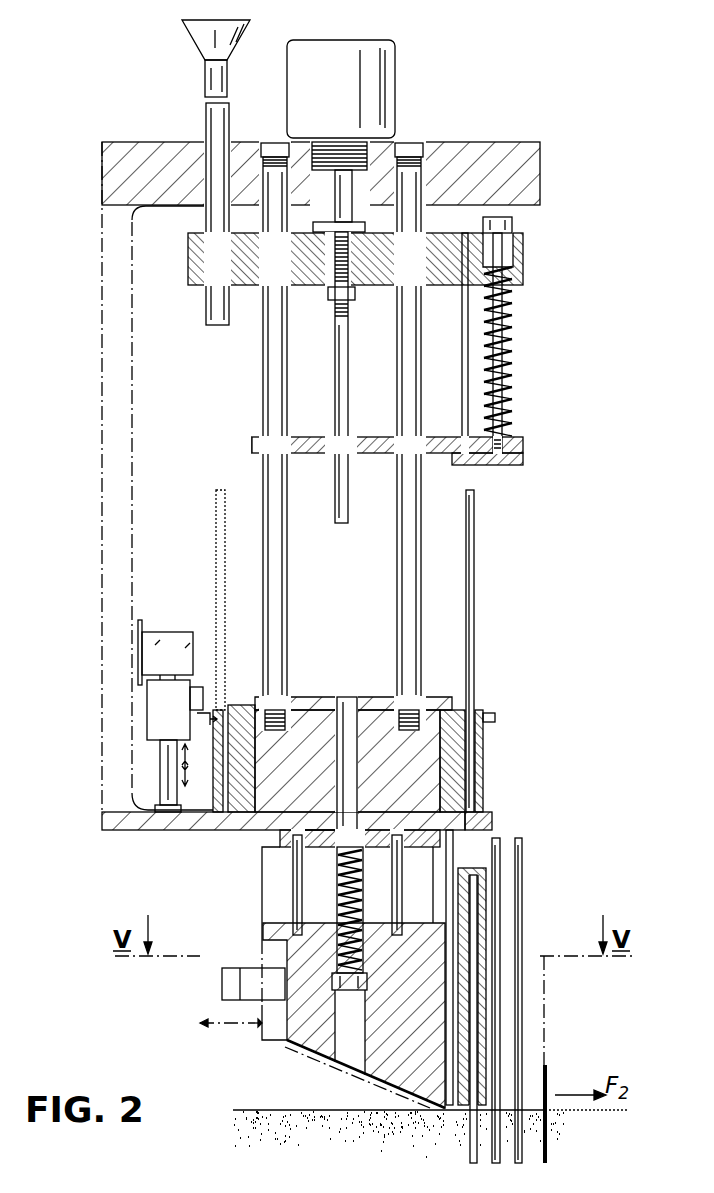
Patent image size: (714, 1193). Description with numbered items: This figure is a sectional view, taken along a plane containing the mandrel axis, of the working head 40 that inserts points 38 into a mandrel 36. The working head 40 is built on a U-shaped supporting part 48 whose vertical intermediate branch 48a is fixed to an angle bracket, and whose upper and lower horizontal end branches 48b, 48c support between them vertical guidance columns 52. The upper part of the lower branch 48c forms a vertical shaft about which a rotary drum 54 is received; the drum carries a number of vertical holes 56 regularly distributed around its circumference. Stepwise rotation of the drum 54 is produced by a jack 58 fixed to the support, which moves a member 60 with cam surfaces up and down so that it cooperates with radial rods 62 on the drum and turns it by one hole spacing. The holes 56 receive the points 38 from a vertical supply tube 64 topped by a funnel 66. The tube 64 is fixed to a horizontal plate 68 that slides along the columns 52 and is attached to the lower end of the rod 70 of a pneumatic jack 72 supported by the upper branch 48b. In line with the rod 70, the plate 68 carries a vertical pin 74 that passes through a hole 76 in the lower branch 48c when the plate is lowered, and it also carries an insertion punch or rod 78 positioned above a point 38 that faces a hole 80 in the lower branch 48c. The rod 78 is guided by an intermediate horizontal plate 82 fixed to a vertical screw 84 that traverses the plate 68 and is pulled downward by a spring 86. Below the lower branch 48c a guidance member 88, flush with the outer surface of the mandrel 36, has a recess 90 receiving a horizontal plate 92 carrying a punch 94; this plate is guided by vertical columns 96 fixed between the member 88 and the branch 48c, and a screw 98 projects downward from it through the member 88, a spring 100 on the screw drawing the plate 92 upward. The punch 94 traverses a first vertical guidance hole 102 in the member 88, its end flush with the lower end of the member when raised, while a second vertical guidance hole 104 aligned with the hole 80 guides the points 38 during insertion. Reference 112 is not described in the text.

The mandrel 36 is at (295, 1124).
The points 38 is at (218, 533).
The working head 40 is at (560, 478).
The U-shaped supporting part 48 is at (98, 290).
The intermediate branch 48a is at (110, 468).
The upper horizontal end branch 48b is at (527, 156).
The lower horizontal end branch 48c is at (175, 836).
The vertical guidance columns 52 is at (410, 535).
The rotary drum 54 is at (445, 755).
The holes 56 is at (226, 814).
The jack 58 is at (150, 650).
The member 60 is at (158, 715).
The radial rods 62 is at (490, 715).
The vertical supply tube 64 is at (212, 123).
The funnel 66 is at (208, 38).
The horizontal plate 68 is at (195, 262).
The rod 70 is at (338, 187).
The pneumatic jack 72 is at (373, 87).
The vertical pin 74 is at (343, 390).
The hole 76 is at (345, 710).
The insertion punch or rod 78 is at (465, 395).
The hole 80 is at (478, 822).
The intermediate horizontal plate 82 is at (522, 470).
The vertical screw 84 is at (500, 300).
The spring 86 is at (510, 345).
The guidance member 88 is at (290, 1045).
The recess 90 is at (270, 877).
The horizontal plate 92 is at (324, 835).
The punch 94 is at (498, 853).
The vertical columns 96 is at (290, 900).
The screw 98 is at (352, 1000).
The spring 100 is at (362, 848).
The first vertical guidance hole 102 is at (382, 1088).
The second vertical guidance hole 104 is at (470, 998).
The soil layer 112 is at (473, 1145).